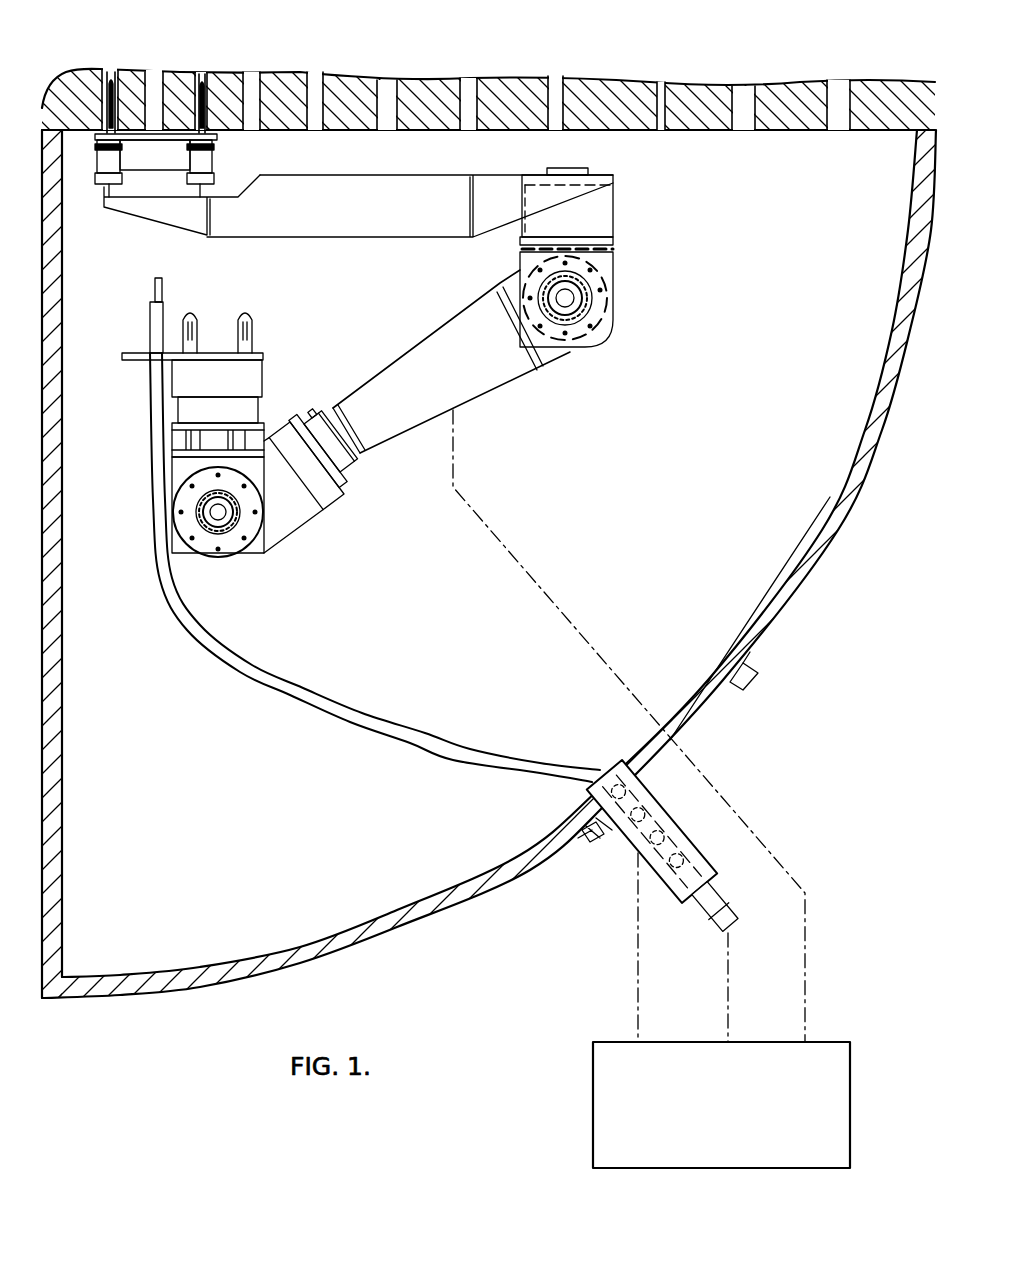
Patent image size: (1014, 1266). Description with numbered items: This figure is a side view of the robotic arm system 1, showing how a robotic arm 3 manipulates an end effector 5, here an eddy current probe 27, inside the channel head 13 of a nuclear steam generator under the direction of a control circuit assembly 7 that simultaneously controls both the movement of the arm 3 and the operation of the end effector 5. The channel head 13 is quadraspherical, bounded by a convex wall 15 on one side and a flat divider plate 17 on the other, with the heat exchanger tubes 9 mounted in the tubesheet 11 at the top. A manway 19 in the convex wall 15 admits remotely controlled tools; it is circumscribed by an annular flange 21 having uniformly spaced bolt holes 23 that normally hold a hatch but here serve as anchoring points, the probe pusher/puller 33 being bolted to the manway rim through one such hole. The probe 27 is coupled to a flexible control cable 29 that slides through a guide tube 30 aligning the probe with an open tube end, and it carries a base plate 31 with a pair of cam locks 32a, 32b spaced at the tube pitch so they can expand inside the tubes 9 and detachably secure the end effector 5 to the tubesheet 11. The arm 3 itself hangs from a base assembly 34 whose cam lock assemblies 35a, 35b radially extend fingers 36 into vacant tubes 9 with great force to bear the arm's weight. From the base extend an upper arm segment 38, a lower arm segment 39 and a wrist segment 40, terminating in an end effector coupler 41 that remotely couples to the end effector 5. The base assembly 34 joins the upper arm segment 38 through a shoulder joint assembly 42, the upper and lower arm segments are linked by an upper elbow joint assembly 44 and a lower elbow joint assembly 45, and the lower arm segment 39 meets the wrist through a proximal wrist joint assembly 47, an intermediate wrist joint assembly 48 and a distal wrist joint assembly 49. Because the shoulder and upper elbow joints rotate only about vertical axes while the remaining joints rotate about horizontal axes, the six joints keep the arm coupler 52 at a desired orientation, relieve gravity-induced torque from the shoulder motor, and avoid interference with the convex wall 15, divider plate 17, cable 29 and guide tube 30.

The robotic arm system 1 is at (88, 52).
The robotic arm 3 is at (374, 248).
The end effector 5 is at (142, 345).
The control circuit assembly 7 is at (852, 1095).
The heat exchanger tubes 9 is at (318, 118).
The tubesheet 11 is at (702, 120).
The channel head 13 is at (677, 441).
The convex wall 15 is at (858, 425).
The divider plate 17 is at (72, 690).
The manway 19 is at (708, 680).
The annular flange 21 is at (762, 679).
The bolt holes 23 is at (588, 840).
The eddy current probe 27 is at (162, 292).
The flexible control cable 29 is at (720, 905).
The guide tube 30 is at (448, 766).
The base plate 31 is at (140, 362).
The cam lock 32a is at (196, 342).
The cam lock 32b is at (250, 345).
The probe pusher/puller 33 is at (656, 822).
The base assembly 34 is at (164, 166).
The cam lock assembly 35a is at (104, 157).
The cam lock assembly 35b is at (210, 158).
The fingers 36 is at (200, 72).
The upper arm segment 38 is at (378, 217).
The lower arm segment 39 is at (448, 377).
The wrist segment 40 is at (190, 406).
The end effector coupler 41 is at (248, 385).
The shoulder joint assembly 42 is at (166, 188).
The upper elbow joint assembly 44 is at (600, 222).
The lower elbow joint assembly 45 is at (602, 300).
The proximal wrist joint assembly 47 is at (300, 515).
The intermediate wrist joint assembly 48 is at (228, 526).
The distal wrist joint assembly 49 is at (200, 440).
The arm coupler 52 is at (340, 458).